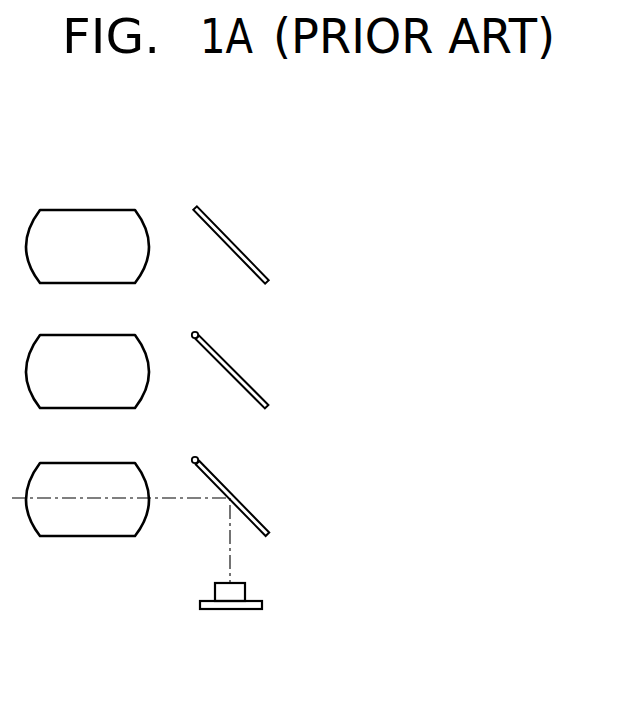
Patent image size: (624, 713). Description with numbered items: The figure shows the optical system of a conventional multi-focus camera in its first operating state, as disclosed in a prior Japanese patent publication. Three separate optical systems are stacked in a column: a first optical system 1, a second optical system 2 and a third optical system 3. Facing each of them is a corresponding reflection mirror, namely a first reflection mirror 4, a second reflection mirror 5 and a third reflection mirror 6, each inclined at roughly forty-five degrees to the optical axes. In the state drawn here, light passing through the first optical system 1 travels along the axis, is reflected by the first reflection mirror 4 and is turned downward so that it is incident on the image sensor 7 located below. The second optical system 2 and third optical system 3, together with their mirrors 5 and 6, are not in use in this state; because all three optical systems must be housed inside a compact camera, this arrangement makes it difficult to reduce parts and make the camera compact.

The first optical system 1 is at (103, 462).
The second optical system 2 is at (103, 334).
The third optical system 3 is at (103, 209).
The first reflection mirror 4 is at (242, 502).
The second reflection mirror 5 is at (242, 373).
The third reflection mirror 6 is at (242, 247).
The image sensor 7 is at (230, 611).